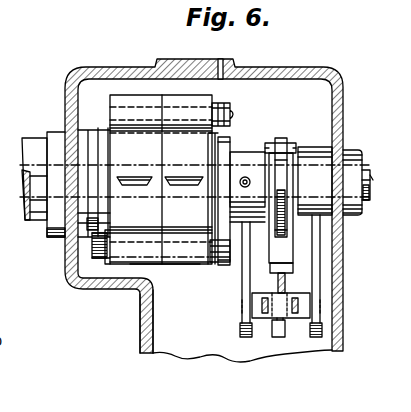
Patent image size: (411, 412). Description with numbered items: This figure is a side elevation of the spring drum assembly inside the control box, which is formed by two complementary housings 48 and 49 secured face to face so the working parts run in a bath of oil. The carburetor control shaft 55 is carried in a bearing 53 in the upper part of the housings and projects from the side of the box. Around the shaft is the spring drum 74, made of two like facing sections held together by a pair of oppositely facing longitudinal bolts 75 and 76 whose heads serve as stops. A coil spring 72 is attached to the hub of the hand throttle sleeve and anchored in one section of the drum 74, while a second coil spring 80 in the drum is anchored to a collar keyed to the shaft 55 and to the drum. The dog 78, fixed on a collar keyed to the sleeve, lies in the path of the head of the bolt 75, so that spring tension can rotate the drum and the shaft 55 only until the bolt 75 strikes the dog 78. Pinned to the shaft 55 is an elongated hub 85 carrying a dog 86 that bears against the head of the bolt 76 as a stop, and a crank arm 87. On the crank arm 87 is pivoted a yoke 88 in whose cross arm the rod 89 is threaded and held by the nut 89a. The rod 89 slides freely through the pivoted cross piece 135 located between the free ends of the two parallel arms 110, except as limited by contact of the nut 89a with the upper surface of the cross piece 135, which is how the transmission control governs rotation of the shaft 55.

The housing 48 is at (342, 106).
The housing 49 is at (140, 316).
The bearing 53 is at (348, 148).
The carburetor control shaft 55 is at (369, 200).
The coil spring 72 is at (137, 180).
The spring drum 74 is at (164, 268).
The bolt 75 is at (233, 108).
The bolt 76 is at (220, 268).
The dog 78 is at (85, 226).
The second coil spring 80 is at (189, 180).
The elongated hub 85 is at (240, 157).
The dog 86 is at (232, 138).
The crank arm 87 is at (282, 140).
The yoke 88 is at (288, 239).
The rod 89 is at (285, 336).
The nut 89a is at (290, 269).
The arms 110 is at (240, 323).
The cross piece 135 is at (262, 316).